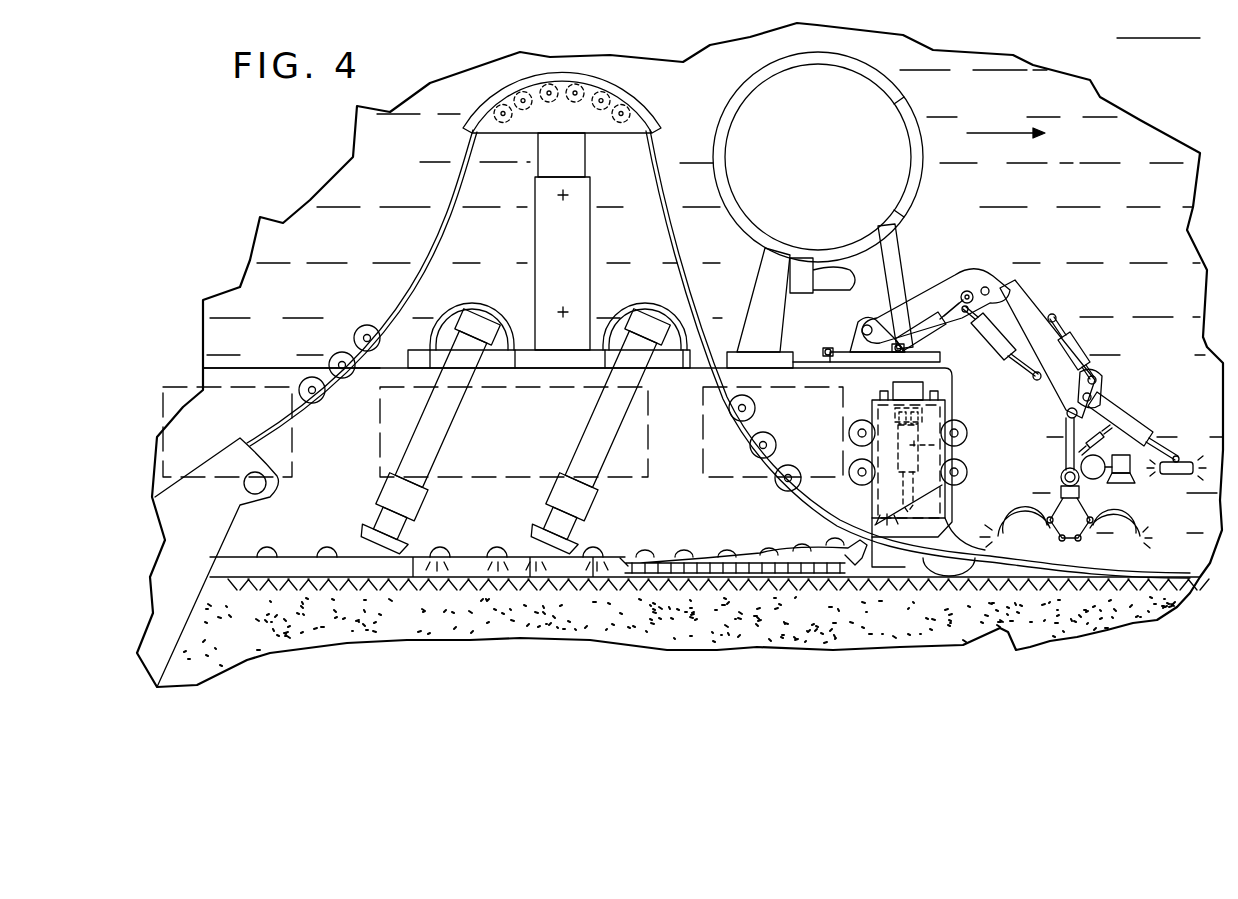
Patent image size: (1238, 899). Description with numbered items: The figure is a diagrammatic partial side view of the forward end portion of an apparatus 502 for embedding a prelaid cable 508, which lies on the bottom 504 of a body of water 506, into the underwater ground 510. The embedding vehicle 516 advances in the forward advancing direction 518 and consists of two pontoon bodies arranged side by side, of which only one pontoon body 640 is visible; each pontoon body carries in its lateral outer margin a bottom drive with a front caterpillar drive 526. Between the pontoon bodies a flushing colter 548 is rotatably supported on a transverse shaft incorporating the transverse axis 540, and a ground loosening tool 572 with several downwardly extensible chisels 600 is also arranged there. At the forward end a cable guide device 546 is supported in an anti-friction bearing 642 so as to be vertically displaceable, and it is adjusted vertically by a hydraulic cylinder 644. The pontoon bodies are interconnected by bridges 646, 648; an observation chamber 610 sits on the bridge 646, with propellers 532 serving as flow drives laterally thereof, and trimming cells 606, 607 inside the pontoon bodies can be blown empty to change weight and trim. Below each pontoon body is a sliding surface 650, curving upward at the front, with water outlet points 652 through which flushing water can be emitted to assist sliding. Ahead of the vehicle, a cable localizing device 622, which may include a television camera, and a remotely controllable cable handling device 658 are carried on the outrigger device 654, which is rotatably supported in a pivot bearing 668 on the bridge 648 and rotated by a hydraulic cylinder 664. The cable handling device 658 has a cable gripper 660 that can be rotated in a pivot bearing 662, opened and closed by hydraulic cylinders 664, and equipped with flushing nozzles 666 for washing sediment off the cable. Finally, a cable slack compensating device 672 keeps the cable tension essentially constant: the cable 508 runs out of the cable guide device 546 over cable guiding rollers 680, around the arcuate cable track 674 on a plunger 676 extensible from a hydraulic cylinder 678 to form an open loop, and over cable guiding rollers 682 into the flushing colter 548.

The apparatus for embedding a cable 502 is at (420, 200).
The bottom of the body of water 504 is at (370, 572).
The body of water 506 is at (370, 250).
The cable 508 is at (425, 272).
The underwater ground 510 is at (313, 648).
The embedding vehicle 516 is at (291, 362).
The forward advancing direction 518 is at (1005, 121).
The front caterpillar drive 526 is at (790, 573).
The propellers 532 is at (897, 258).
The transverse axis 540 is at (265, 494).
The cable guide device 546 is at (873, 573).
The flushing colter 548 is at (208, 572).
The ground loosening tool 572 is at (516, 431).
The downwardly extensible chisels 600 is at (398, 531).
The trimming cell 606 is at (626, 470).
The trimming cell 607 is at (721, 470).
The observation chamber 610 is at (895, 198).
The cable localizing device 622 is at (1182, 456).
The pontoon body 640 is at (253, 373).
The anti-friction bearing 642 is at (957, 426).
The hydraulic cylinder 644 is at (958, 460).
The bridge 646 is at (546, 360).
The bridge 648 is at (762, 362).
The sliding surface 650 is at (533, 560).
The water outlet points 652 is at (458, 563).
The outrigger device 654 is at (1107, 386).
The cable handling device 658 is at (1148, 524).
The cable gripper 660 is at (1012, 514).
The pivot bearing 662 is at (1063, 477).
The hydraulic cylinder 664 is at (830, 348).
The flushing nozzles 666 is at (1141, 543).
The pivot bearing 668 is at (918, 348).
The cable slack compensating device 672 is at (655, 103).
The cable track 674 is at (663, 118).
The plunger 676 is at (575, 158).
The hydraulic cylinder 678 is at (575, 232).
The cable guiding rollers 680 is at (772, 437).
The cable guiding rollers 682 is at (370, 325).